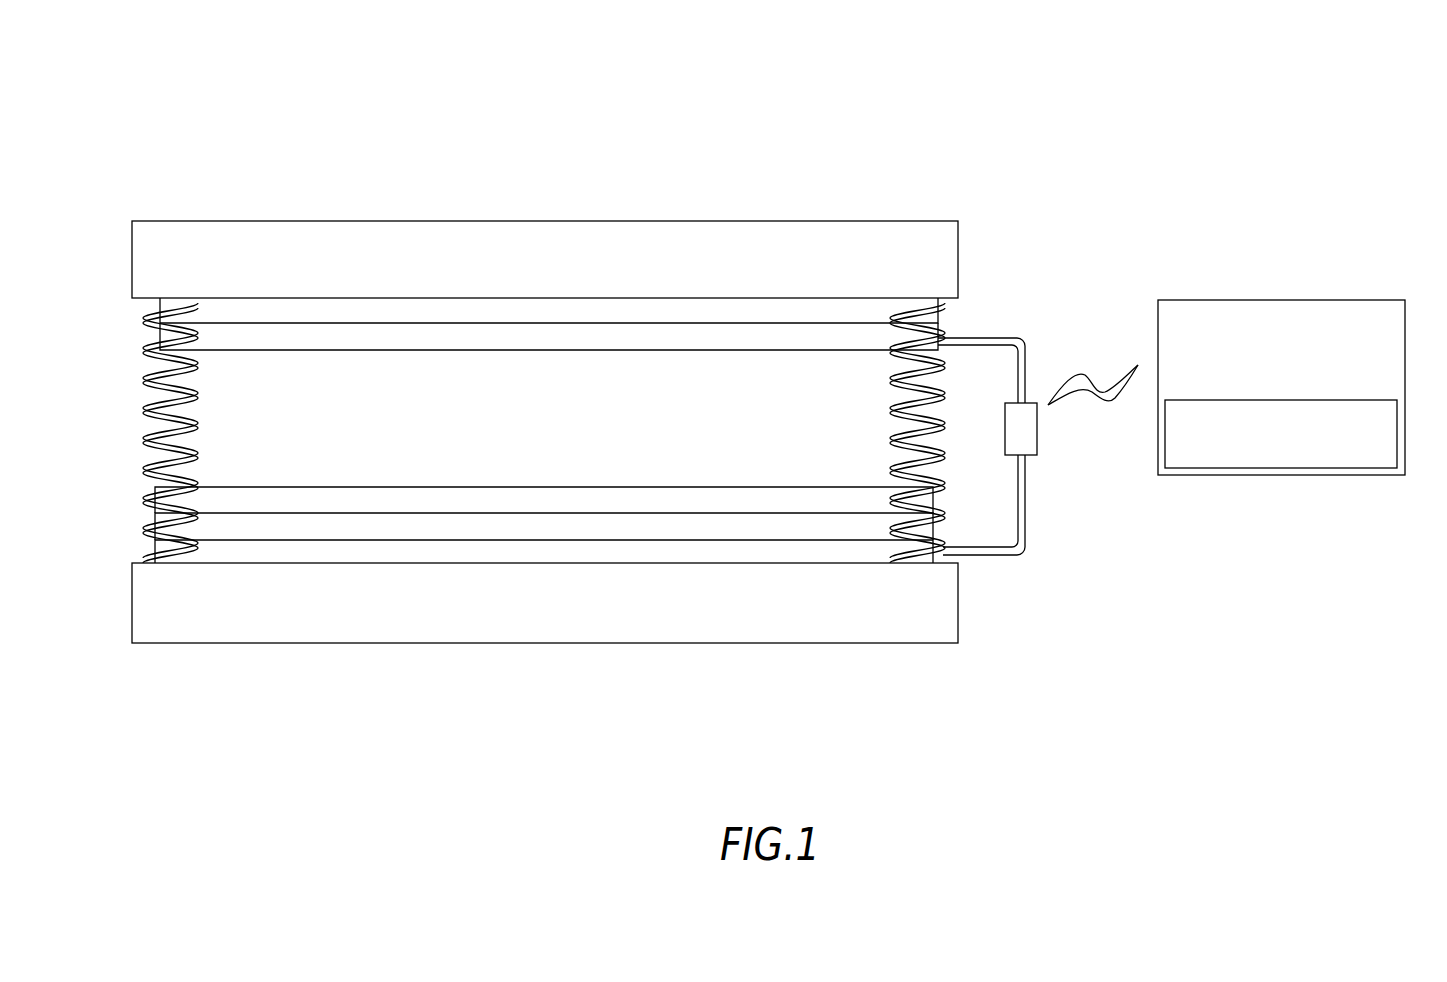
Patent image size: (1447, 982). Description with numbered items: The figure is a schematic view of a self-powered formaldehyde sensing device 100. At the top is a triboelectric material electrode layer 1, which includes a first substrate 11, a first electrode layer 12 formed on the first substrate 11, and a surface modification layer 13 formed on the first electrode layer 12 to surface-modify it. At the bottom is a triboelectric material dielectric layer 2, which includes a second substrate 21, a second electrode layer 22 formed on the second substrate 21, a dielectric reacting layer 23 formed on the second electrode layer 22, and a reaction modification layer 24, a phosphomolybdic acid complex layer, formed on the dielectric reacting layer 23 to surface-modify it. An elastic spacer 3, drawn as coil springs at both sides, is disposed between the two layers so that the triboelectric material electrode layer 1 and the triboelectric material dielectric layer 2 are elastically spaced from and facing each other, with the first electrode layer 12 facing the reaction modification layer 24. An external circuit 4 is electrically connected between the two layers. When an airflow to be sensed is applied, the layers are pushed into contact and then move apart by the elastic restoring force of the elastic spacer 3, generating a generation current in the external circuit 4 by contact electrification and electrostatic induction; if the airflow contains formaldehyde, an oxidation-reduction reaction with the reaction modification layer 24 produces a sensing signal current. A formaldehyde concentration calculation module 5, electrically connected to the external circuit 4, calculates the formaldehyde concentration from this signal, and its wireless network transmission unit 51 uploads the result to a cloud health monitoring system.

The self-powered formaldehyde sensing device 100 is at (177, 129).
The triboelectric material electrode layer 1 is at (472, 149).
The first substrate 11 is at (585, 235).
The first electrode layer 12 is at (520, 340).
The surface modification layer 13 is at (560, 315).
The triboelectric material dielectric layer 2 is at (483, 707).
The second substrate 21 is at (490, 623).
The second electrode layer 22 is at (525, 550).
The dielectric reacting layer 23 is at (567, 530).
The reaction modification layer 24 is at (593, 500).
The elastic spacer 3 is at (145, 410).
The external circuit 4 is at (1030, 448).
The formaldehyde concentration calculation module 5 is at (1393, 352).
The wireless network transmission unit 51 is at (1388, 435).